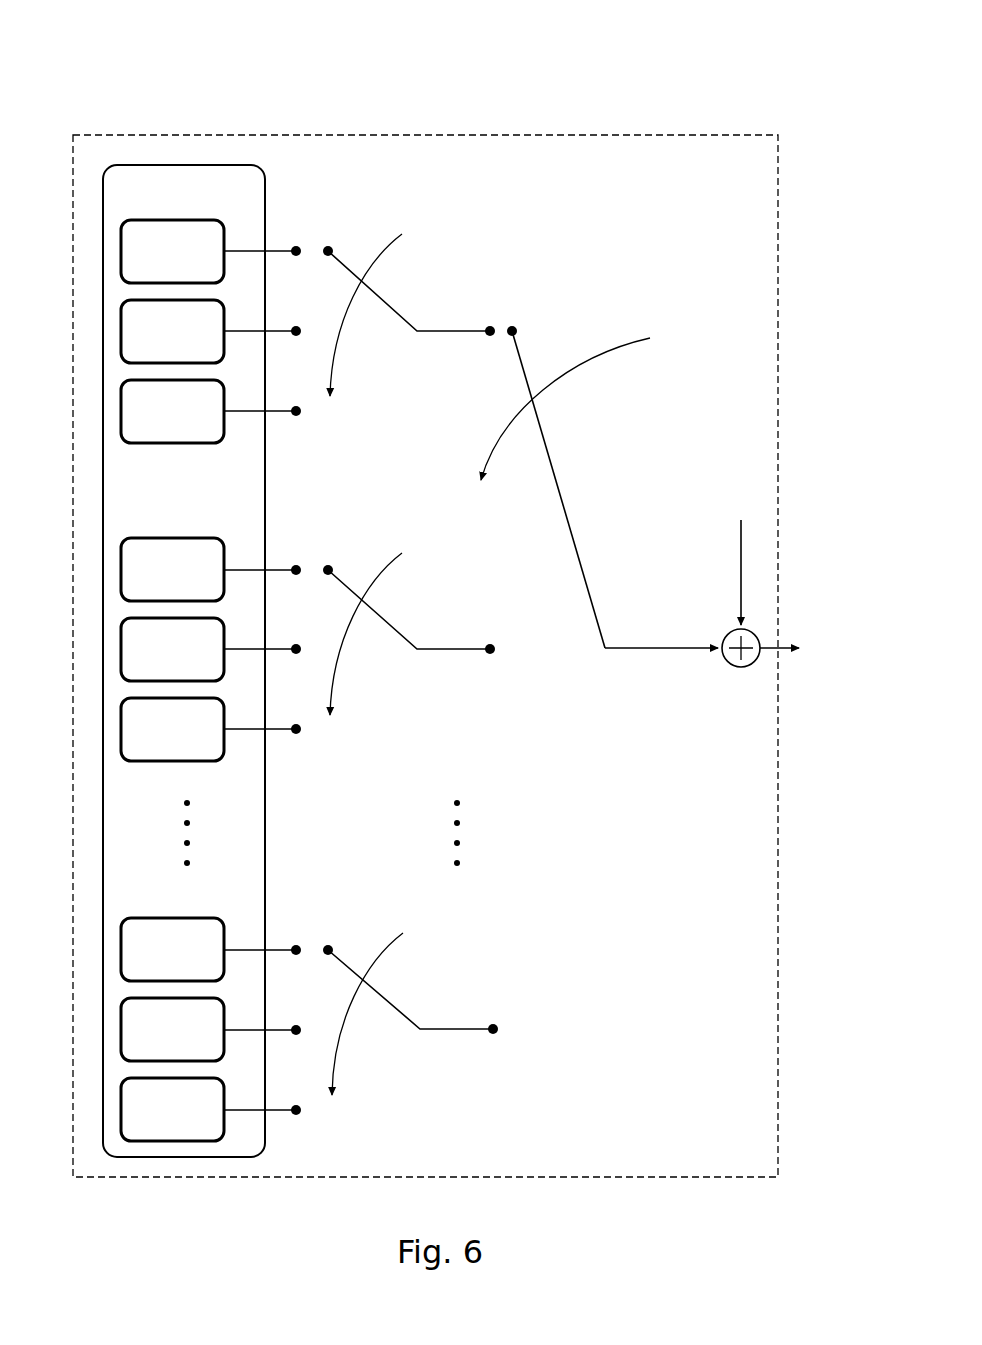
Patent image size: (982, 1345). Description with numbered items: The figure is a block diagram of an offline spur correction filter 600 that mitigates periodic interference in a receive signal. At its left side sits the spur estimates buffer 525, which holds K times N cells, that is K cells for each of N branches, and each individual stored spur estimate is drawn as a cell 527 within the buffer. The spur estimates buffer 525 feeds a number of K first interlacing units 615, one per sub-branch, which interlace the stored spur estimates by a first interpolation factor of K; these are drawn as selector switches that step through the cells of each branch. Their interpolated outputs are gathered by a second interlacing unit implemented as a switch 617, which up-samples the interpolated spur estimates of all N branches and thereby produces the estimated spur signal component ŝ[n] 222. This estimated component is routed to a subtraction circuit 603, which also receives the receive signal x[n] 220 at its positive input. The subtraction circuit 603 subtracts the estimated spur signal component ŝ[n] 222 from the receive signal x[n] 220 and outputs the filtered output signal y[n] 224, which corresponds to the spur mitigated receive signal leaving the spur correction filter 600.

The spur correction filter 600 is at (457, 124).
The spur estimates buffer 525 is at (160, 178).
The spur estimate buffer entry 527 is at (212, 242).
The first interlacing unit 615 is at (370, 236).
The switch 617 is at (563, 336).
The receive signal x[n] 220 is at (749, 474).
The estimated spur signal component ŝ[n] 222 is at (652, 594).
The filtered output signal y[n] 224 is at (834, 614).
The subtraction circuit 603 is at (748, 668).